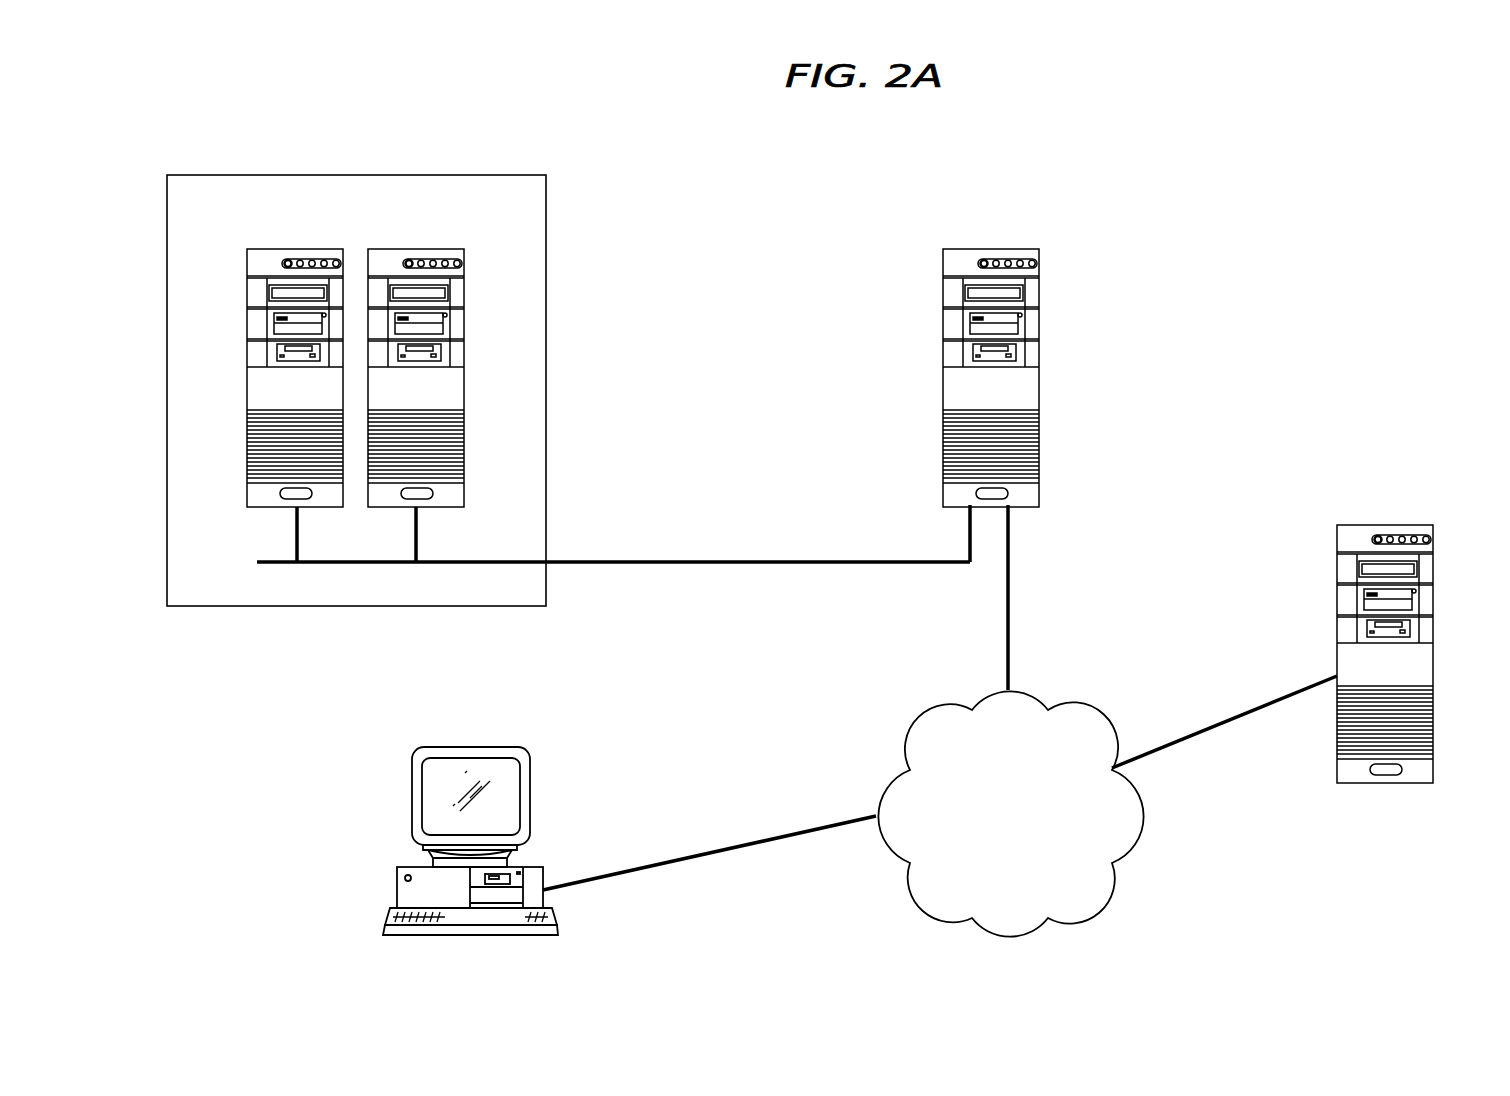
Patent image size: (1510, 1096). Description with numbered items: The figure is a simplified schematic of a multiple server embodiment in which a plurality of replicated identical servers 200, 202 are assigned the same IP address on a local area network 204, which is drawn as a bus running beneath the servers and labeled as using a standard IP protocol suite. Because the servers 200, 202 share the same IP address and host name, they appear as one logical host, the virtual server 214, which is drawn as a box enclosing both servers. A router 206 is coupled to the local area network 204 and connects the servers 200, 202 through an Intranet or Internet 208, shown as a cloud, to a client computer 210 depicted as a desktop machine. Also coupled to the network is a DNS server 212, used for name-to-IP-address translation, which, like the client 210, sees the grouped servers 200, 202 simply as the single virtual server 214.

The server 200 is at (247, 388).
The server 202 is at (464, 388).
The local area network 204 is at (851, 565).
The router 206 is at (1038, 388).
The Intranet or Internet 208 is at (1140, 848).
The client computer 210 is at (412, 798).
The DNS server 212 is at (1436, 667).
The virtual server 214 is at (546, 293).